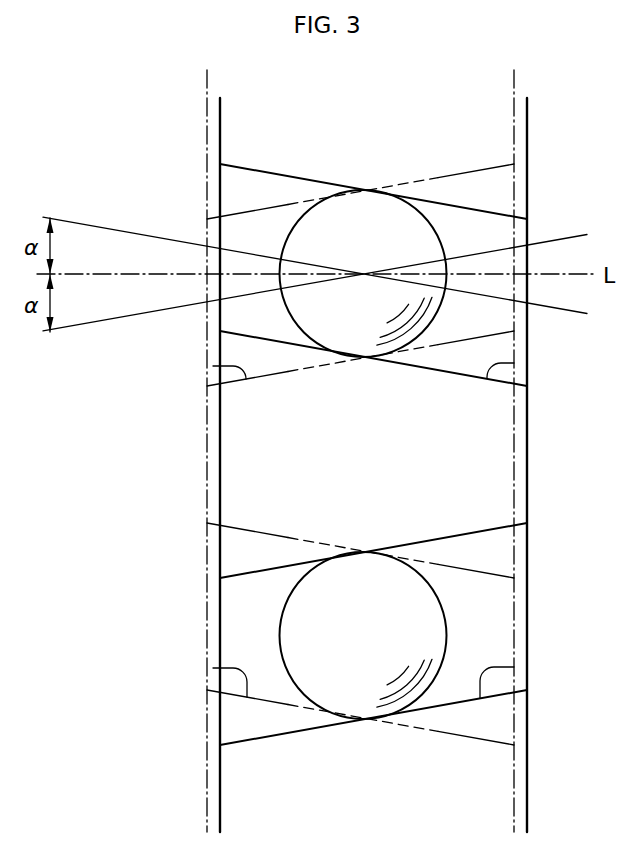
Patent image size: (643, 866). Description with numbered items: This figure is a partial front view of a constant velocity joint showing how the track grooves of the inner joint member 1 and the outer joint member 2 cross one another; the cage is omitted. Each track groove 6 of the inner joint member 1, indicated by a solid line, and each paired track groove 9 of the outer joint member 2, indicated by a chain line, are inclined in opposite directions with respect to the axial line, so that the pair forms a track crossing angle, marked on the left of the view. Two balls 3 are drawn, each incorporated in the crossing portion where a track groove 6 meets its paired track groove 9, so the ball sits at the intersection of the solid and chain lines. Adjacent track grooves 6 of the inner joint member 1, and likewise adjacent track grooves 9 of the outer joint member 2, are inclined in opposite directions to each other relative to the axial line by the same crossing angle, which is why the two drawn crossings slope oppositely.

The inner joint member 1 is at (528, 128).
The outer joint member 2 is at (207, 122).
The ball 3 is at (349, 207).
The track groove 6 is at (514, 363).
The track groove 9 is at (213, 367).